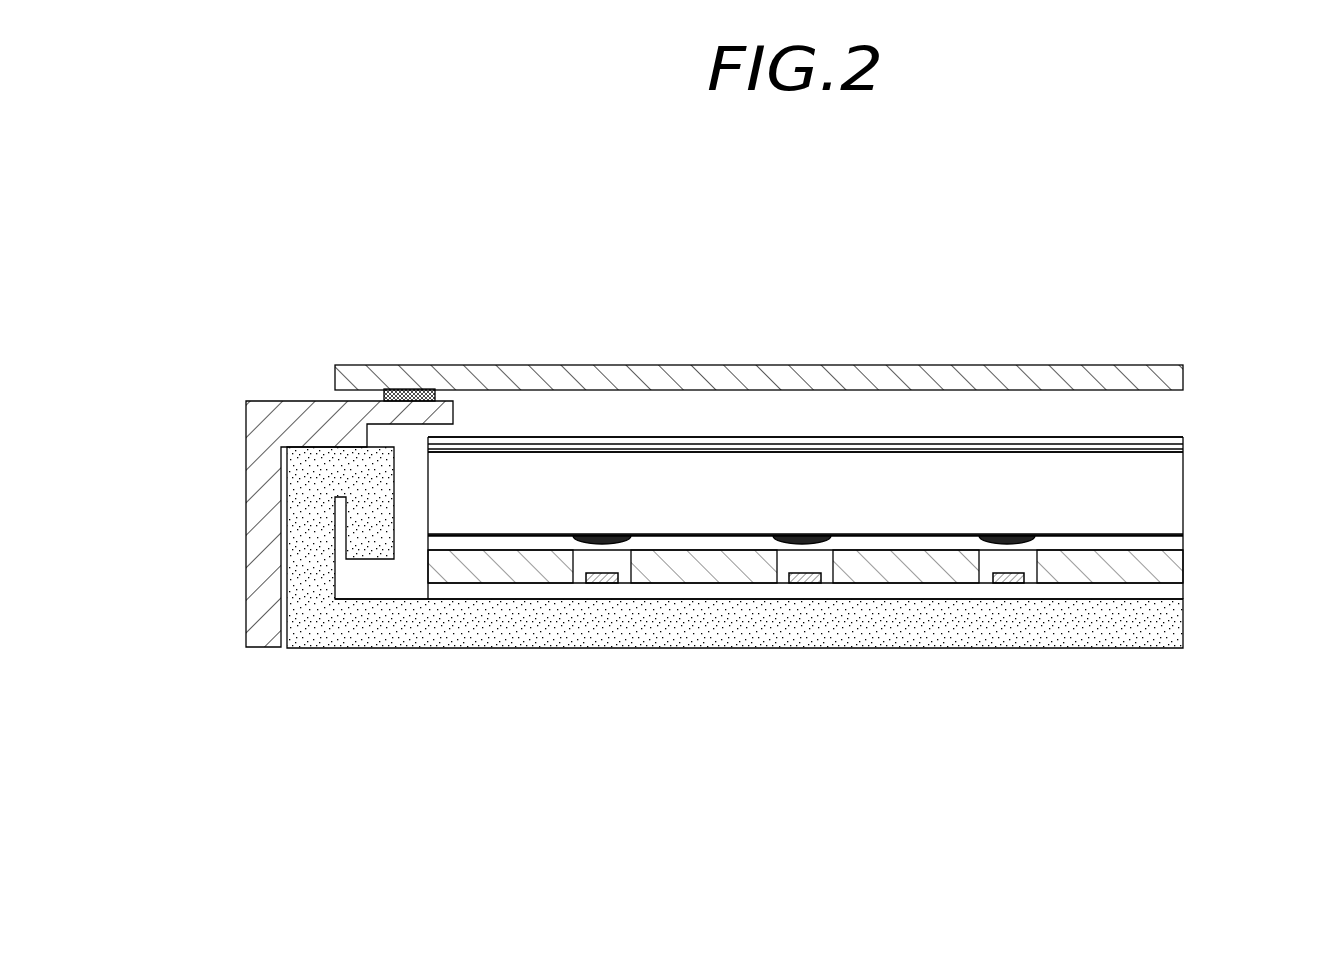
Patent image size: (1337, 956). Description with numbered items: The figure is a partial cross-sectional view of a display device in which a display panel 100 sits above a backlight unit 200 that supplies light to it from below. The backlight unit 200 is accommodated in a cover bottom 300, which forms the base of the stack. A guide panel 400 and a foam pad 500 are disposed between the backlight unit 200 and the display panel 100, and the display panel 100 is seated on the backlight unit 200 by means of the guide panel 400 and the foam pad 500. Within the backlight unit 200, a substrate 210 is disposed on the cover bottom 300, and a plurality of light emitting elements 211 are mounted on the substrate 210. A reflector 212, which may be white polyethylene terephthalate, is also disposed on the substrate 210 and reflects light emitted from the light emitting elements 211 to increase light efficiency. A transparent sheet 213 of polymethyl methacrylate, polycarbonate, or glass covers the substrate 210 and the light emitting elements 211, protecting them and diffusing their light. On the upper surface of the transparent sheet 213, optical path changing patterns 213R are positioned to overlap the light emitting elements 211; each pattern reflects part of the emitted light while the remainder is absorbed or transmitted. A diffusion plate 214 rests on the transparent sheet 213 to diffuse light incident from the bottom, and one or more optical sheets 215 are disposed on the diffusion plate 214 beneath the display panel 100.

The display panel 100 is at (1183, 377).
The backlight unit 200 is at (1280, 448).
The substrate 210 is at (1170, 594).
The light emitting elements 211 is at (605, 583).
The reflector 212 is at (664, 575).
The transparent sheet 213 is at (1177, 546).
The optical path changing pattern 213R is at (1013, 537).
The diffusion plate 214 is at (1173, 487).
The optical sheets 215 is at (1183, 437).
The cover bottom 300 is at (1172, 625).
The guide panel 400 is at (257, 505).
The foam pad 500 is at (410, 388).